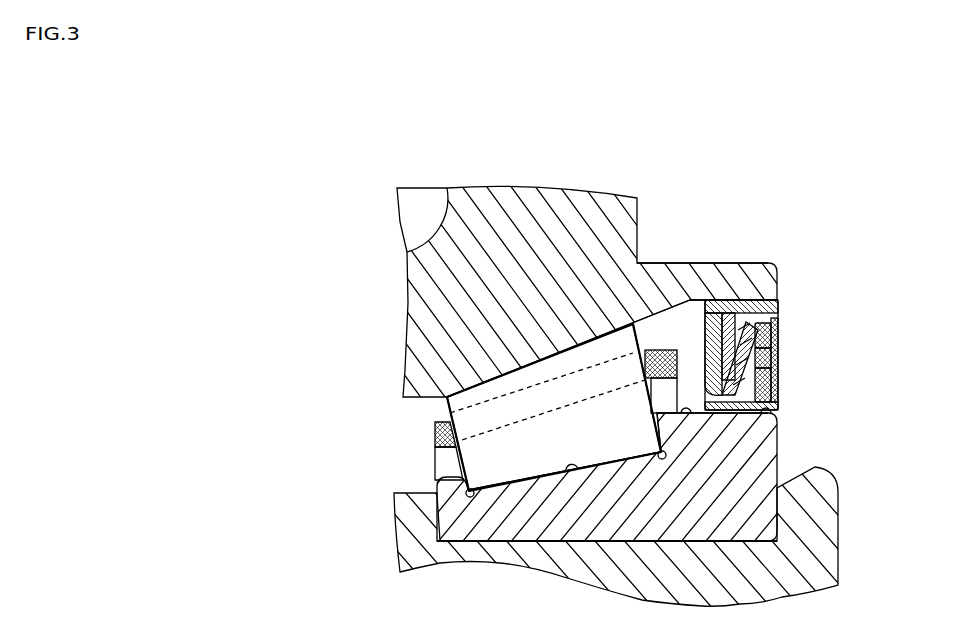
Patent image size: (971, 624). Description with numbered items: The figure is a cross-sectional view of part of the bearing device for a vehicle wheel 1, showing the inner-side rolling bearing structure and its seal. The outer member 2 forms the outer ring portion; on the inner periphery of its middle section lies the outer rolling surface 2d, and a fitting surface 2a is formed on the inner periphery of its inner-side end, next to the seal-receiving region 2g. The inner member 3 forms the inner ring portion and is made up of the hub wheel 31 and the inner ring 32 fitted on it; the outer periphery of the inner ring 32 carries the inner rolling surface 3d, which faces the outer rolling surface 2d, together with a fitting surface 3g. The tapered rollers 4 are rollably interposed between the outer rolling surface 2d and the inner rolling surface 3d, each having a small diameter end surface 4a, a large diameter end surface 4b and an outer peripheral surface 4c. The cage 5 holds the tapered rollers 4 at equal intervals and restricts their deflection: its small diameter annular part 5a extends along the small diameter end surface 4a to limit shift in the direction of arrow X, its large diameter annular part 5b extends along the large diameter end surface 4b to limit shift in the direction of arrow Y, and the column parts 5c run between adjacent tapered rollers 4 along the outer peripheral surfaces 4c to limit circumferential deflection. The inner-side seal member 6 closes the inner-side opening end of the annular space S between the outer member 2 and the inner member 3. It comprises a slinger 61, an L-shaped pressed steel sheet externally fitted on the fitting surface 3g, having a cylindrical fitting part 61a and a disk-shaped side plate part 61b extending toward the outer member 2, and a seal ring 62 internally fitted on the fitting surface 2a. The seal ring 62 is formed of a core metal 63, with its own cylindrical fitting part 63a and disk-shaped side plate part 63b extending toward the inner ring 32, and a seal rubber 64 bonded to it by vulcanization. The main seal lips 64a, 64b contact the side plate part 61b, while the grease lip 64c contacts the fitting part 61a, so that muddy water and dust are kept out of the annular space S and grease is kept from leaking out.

The tapered roller bearing 1 is at (570, 351).
The outer member 2 is at (473, 181).
The outer rolling surface 2d is at (553, 360).
The fitting surface 2a is at (691, 298).
The seal fitting portion (groove) of outer ring 2g is at (733, 263).
The inner member 3 is at (573, 513).
The hub wheel 31 is at (840, 537).
The inner ring 32 is at (777, 433).
The inner rolling surface 3d is at (566, 471).
The fitting surface 3g is at (680, 414).
The tapered roller 4 is at (556, 431).
The small diameter end surface 4a is at (462, 470).
The large diameter end surface 4b is at (652, 409).
The outer peripheral surface 4c is at (549, 447).
The cage 5 is at (550, 483).
The small diameter annular part 5a is at (436, 464).
The large diameter annular part 5b is at (679, 388).
The column part 5c is at (517, 401).
The inner-side seal member 6 is at (816, 344).
The slinger 61 is at (811, 379).
The fitting part 61a is at (745, 412).
The side plate part 61b is at (780, 388).
The seal ring 62 is at (812, 325).
The core metal 63 is at (791, 322).
The fitting part 63a is at (772, 265).
The side plate part 63b is at (777, 296).
The seal rubber 64 is at (800, 354).
The seal lip 64a is at (779, 322).
The seal lip 64b is at (796, 381).
The seal lip 64c is at (779, 347).
The annular space S is at (409, 440).
The arrow X is at (432, 412).
The arrow Y is at (651, 333).